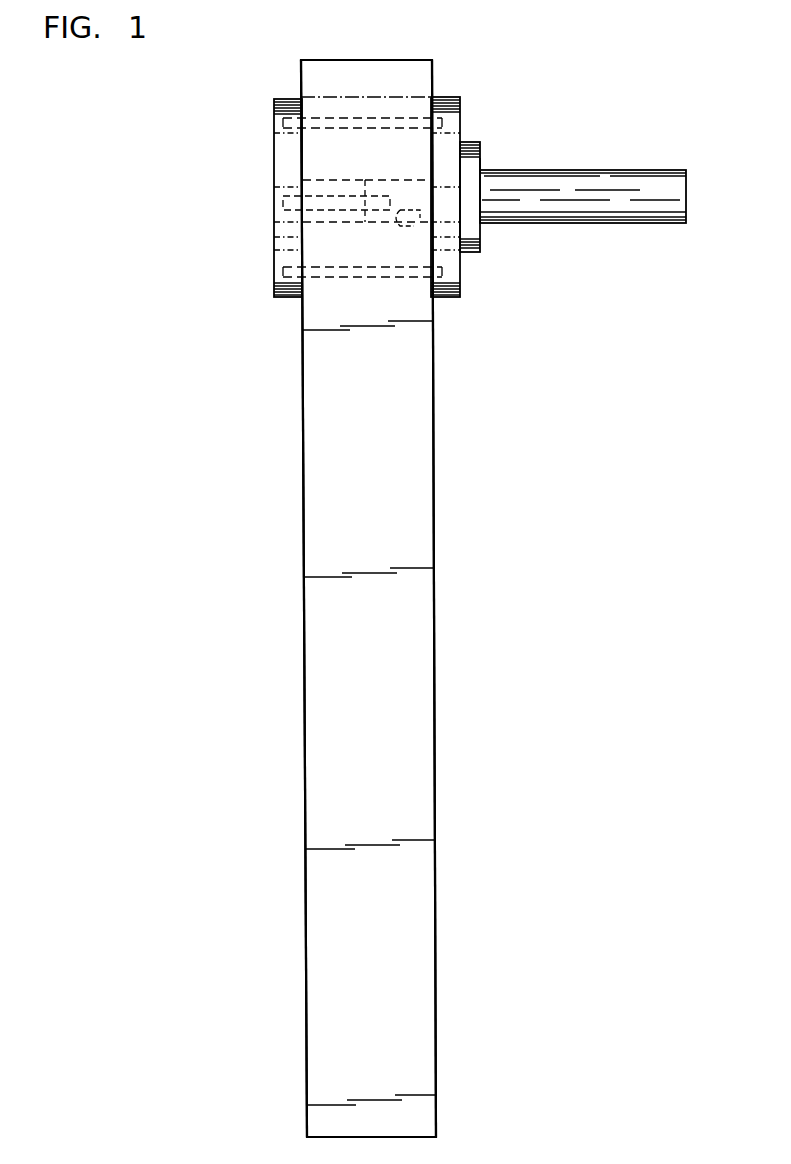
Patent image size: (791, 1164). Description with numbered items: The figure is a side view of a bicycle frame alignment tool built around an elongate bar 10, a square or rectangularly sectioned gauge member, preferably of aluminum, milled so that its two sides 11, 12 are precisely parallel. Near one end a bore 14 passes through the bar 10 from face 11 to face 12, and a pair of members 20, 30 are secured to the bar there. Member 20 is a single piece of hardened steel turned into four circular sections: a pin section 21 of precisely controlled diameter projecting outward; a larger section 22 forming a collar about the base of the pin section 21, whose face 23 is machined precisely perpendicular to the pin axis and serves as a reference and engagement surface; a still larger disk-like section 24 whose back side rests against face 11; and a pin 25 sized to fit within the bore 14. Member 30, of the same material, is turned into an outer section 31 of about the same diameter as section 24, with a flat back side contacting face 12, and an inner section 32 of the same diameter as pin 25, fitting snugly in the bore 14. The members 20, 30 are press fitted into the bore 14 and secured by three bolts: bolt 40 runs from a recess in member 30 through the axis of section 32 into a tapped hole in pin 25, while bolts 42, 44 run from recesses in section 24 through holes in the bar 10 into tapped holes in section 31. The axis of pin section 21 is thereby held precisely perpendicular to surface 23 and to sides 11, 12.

The bar 10 is at (386, 779).
The side 11 is at (433, 748).
The side 12 is at (305, 745).
The bore 14 is at (408, 226).
The member 20 is at (558, 157).
The pin section 21 is at (620, 223).
The section 22 is at (470, 142).
The face 23 is at (482, 159).
The section 24 is at (443, 97).
The pin 25 is at (401, 178).
The member 30 is at (298, 175).
The outer section 31 is at (287, 98).
The inner section 32 is at (336, 178).
The bolt 40 is at (283, 199).
The bolt 42 is at (363, 117).
The bolt 44 is at (417, 276).